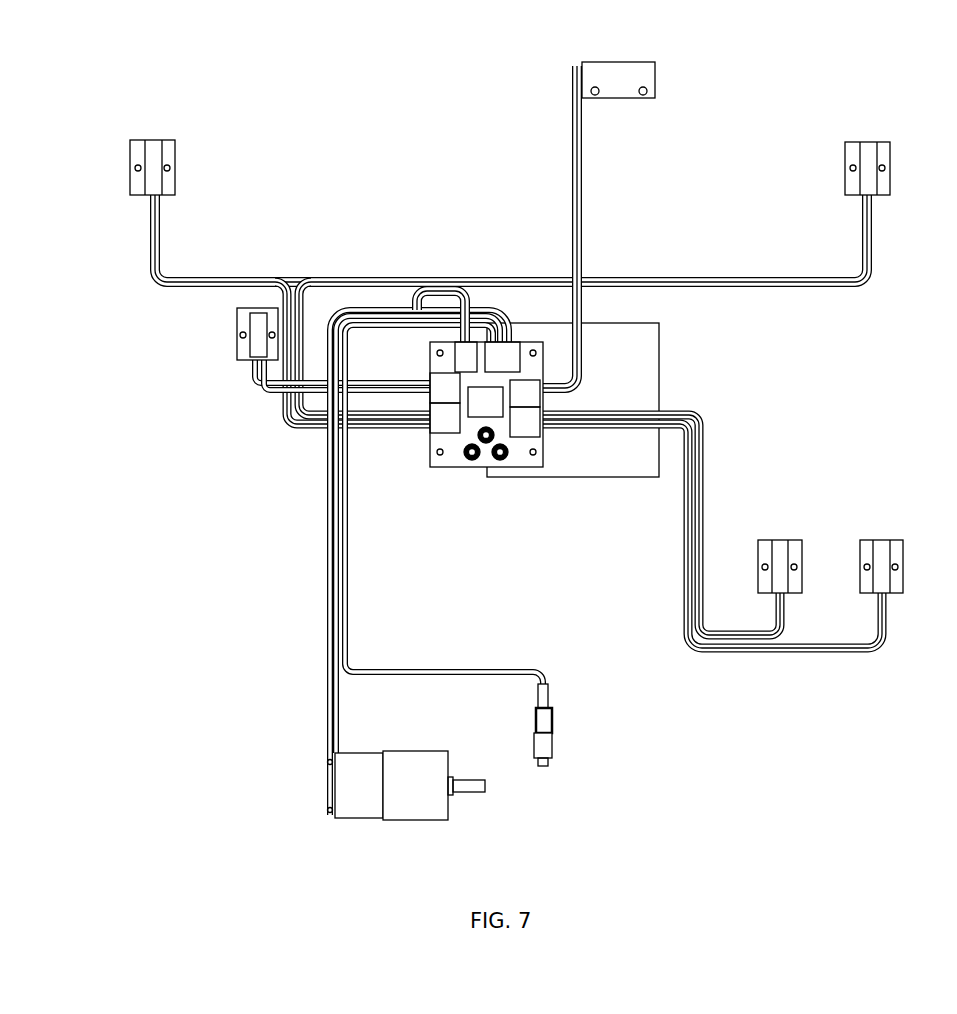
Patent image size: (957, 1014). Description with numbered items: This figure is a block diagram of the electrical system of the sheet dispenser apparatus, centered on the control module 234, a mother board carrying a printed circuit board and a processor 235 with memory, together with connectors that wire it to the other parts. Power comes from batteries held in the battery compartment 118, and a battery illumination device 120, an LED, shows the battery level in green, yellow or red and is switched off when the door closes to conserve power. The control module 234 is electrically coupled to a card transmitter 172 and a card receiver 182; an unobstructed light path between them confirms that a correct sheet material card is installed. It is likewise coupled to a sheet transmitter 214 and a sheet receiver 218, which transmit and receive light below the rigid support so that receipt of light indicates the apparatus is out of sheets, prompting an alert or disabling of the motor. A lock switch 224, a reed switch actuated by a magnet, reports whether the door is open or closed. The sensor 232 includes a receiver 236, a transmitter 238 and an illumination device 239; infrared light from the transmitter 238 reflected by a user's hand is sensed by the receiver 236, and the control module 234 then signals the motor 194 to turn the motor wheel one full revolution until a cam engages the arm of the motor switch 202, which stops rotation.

The battery compartment 118 is at (648, 360).
The battery illumination device 120 is at (240, 345).
The transmitter 172 is at (155, 140).
The light receiver 182 is at (868, 145).
The motor 194 is at (340, 792).
The motor switch 202 is at (546, 745).
The sheet transmitter 214 is at (778, 548).
The sheet receiver 218 is at (881, 548).
The lock switch 224 is at (621, 78).
The sensor 232 is at (506, 420).
The control module 234 is at (529, 333).
The processor 235 is at (485, 408).
The receiver 236 is at (472, 460).
The transmitter 238 is at (501, 460).
The illumination device 239 is at (498, 441).